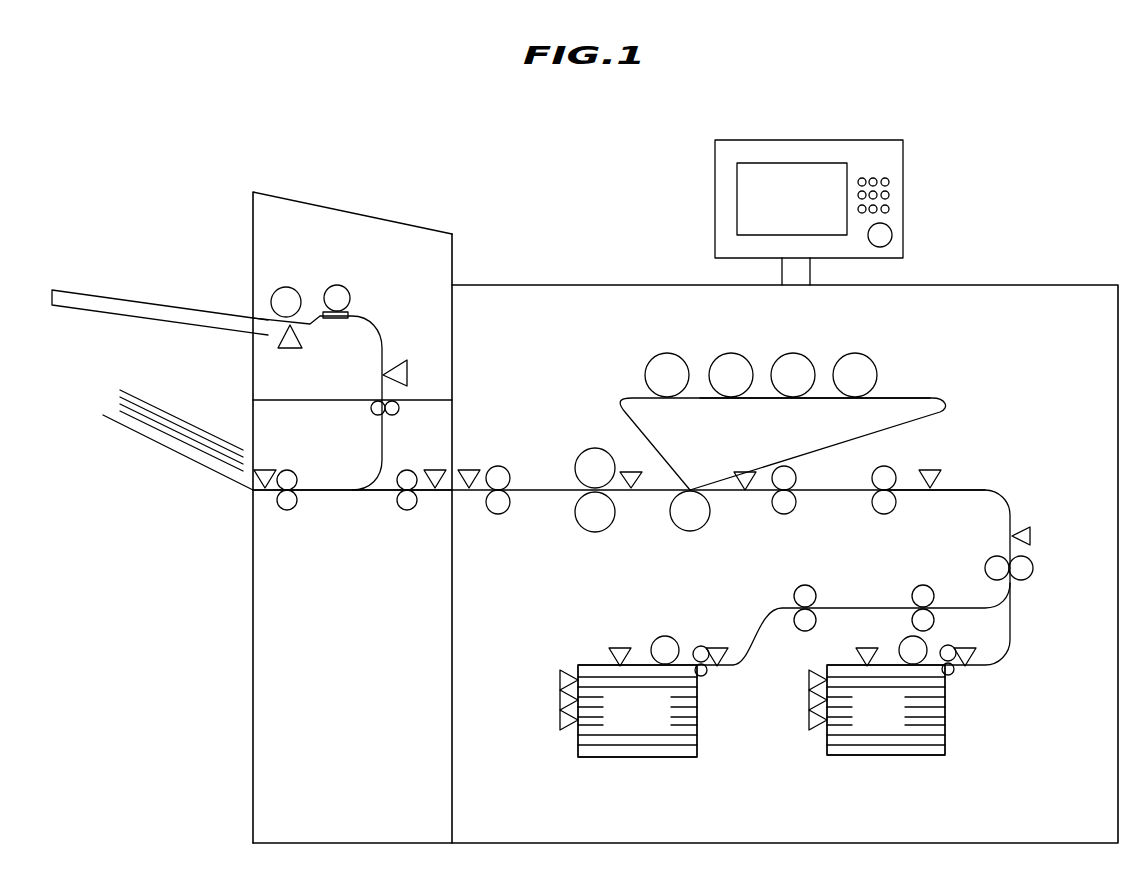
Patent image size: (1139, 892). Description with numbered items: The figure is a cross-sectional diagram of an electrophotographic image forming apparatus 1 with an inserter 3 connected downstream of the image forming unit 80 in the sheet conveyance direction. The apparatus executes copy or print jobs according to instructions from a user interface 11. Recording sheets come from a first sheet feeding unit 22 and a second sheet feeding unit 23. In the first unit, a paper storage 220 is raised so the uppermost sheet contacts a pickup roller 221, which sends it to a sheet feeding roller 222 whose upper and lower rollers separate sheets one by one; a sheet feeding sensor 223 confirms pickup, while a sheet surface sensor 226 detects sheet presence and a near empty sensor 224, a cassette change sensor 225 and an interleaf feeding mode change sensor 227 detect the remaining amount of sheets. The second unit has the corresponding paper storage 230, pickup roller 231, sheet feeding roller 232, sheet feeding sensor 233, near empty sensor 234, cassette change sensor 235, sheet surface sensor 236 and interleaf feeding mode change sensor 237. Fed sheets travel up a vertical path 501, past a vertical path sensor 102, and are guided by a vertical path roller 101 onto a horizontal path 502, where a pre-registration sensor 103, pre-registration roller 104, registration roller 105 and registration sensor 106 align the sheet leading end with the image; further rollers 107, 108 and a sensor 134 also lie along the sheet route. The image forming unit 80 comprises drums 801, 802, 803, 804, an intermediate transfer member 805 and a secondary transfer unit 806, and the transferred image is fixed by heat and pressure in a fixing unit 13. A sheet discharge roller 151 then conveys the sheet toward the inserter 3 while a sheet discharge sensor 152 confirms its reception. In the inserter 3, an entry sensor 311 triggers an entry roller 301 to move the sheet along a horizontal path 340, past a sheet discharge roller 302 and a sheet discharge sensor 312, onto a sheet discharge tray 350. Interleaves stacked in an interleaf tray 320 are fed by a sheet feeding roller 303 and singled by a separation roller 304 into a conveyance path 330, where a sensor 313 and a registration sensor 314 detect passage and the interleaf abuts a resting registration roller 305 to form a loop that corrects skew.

The image forming apparatus 1 is at (578, 285).
The inserter 3 is at (300, 192).
The user interface 11 is at (862, 140).
The fixing unit 13 is at (595, 450).
The sheet feeding unit 22 is at (830, 665).
The sheet feeding unit 23 is at (578, 665).
The image forming unit 80 is at (782, 444).
The vertical path roller 101 is at (1033, 570).
The vertical path sensor 102 is at (1030, 536).
The pre-registration sensor 103 is at (932, 468).
The pre-registration roller 104 is at (890, 502).
The registration roller 105 is at (784, 514).
The registration sensor 106 is at (745, 492).
The conveyance rollers 107 is at (810, 586).
The conveyance rollers 108 is at (925, 592).
The sensor 134 is at (632, 482).
The sheet discharge roller 151 is at (508, 470).
The sheet discharge sensor 152 is at (469, 470).
The paper storage 220 is at (886, 710).
The pickup roller 221 is at (912, 636).
The sheet feeding roller 222 is at (950, 645).
The sheet feeding sensor 223 is at (966, 668).
The near empty sensor 224 is at (809, 700).
The cassette change sensor 225 is at (809, 722).
The sheet surface sensor 226 is at (867, 648).
The interleaf feeding mode change sensor 227 is at (809, 680).
The paper storage 230 is at (637, 711).
The pickup roller 231 is at (660, 640).
The sheet feeding roller 232 is at (700, 648).
The sheet feeding sensor 233 is at (718, 648).
The near empty sensor 234 is at (560, 700).
The cassette change sensor 235 is at (560, 722).
The sheet surface sensor 236 is at (620, 648).
The interleaf feeding mode change sensor 237 is at (560, 680).
The entry roller 301 is at (405, 512).
The sheet discharge roller 302 is at (287, 512).
The sheet feeding roller 303 is at (288, 287).
The separation roller 304 is at (342, 286).
The registration roller 305 is at (378, 416).
The entry sensor 311 is at (435, 470).
The sheet discharge sensor 312 is at (265, 470).
The sensor 313 is at (282, 345).
The registration sensor 314 is at (407, 373).
The interleaf tray 320 is at (165, 292).
The conveyance path 330 is at (384, 345).
The horizontal path 340 is at (330, 492).
The sheet discharge tray 350 is at (150, 405).
The vertical path 501 is at (1012, 620).
The horizontal path 502 is at (965, 490).
The drum 801 is at (667, 355).
The drum 802 is at (732, 355).
The drum 803 is at (793, 355).
The drum 804 is at (855, 355).
The intermediate transfer member 805 is at (927, 400).
The secondary transfer unit 806 is at (690, 531).